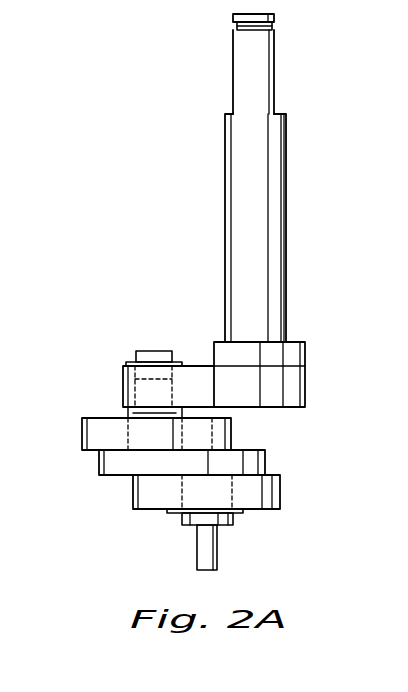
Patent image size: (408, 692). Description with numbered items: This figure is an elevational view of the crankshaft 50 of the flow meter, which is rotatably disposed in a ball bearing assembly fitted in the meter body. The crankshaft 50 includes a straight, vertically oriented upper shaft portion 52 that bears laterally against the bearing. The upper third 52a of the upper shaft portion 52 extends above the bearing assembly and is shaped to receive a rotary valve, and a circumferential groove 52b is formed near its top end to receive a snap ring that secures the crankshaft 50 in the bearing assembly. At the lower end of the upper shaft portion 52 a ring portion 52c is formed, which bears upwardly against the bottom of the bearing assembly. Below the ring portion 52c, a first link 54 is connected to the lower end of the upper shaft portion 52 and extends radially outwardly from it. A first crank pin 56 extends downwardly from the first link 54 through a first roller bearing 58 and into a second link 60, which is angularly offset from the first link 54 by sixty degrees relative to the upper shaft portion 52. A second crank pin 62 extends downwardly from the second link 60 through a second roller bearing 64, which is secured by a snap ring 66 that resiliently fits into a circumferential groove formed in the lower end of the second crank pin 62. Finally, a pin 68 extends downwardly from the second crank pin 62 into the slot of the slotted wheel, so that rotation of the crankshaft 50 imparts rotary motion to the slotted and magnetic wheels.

The crankshaft 50 is at (122, 213).
The upper shaft portion 52 is at (287, 162).
The upper third of the upper shaft portion 52a is at (219, 33).
The circumferential groove 52b is at (275, 23).
The ring portion 52c is at (306, 355).
The first link 54 is at (122, 391).
The first crank pin 56 is at (147, 351).
The first roller bearing 58 is at (82, 433).
The second link 60 is at (267, 462).
The second crank pin 62 is at (237, 520).
The second roller bearing 64 is at (133, 490).
The snap ring 66 is at (168, 511).
The pin 68 is at (218, 550).